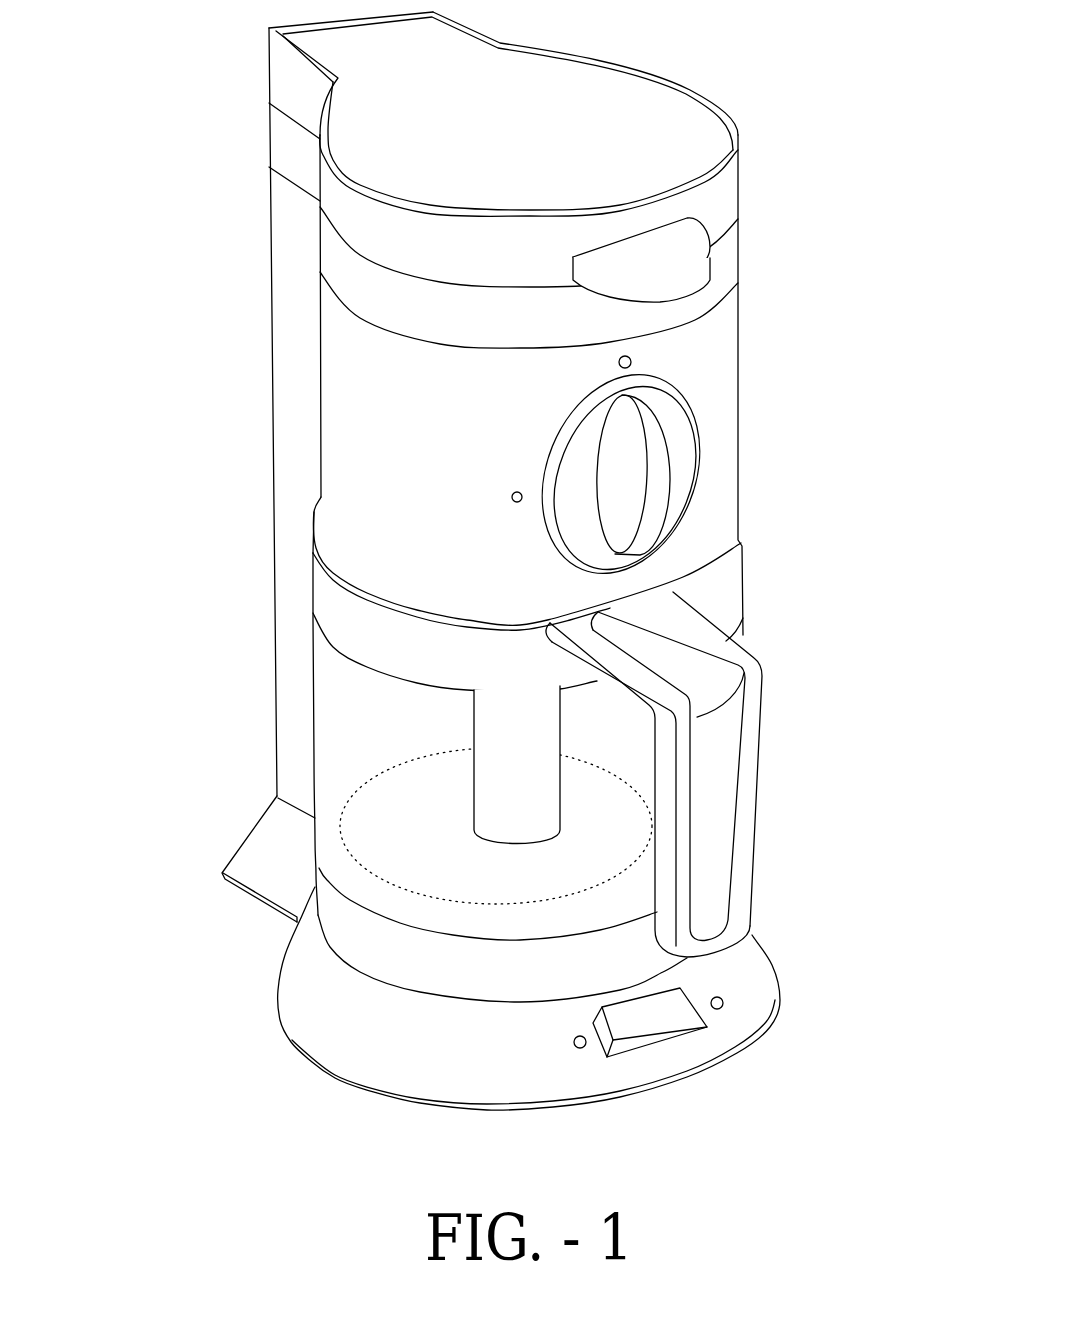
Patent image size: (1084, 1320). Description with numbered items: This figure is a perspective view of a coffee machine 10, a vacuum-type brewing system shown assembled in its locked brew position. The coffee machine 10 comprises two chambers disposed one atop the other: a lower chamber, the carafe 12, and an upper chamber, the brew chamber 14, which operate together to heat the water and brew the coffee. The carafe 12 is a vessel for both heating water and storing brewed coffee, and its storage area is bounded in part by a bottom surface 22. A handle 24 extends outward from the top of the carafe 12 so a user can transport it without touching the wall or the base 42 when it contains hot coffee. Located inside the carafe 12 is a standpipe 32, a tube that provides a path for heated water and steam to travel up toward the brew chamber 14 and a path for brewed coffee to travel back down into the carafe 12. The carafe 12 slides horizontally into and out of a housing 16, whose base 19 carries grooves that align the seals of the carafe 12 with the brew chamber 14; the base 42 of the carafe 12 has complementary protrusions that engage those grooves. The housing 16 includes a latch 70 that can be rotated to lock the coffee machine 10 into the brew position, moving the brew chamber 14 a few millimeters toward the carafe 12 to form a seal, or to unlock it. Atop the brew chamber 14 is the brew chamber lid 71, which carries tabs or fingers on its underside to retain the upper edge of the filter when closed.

The coffee machine 10 is at (188, 284).
The carafe 12 is at (805, 797).
The brew chamber 14 is at (783, 339).
The housing 16 is at (290, 573).
The base of the housing 19 is at (353, 1060).
The bottom surface 22 is at (400, 867).
The handle 24 is at (723, 912).
The standpipe 32 is at (487, 800).
The base of the carafe 42 is at (362, 940).
The latch 70 is at (720, 486).
The brew chamber lid 71 is at (625, 97).